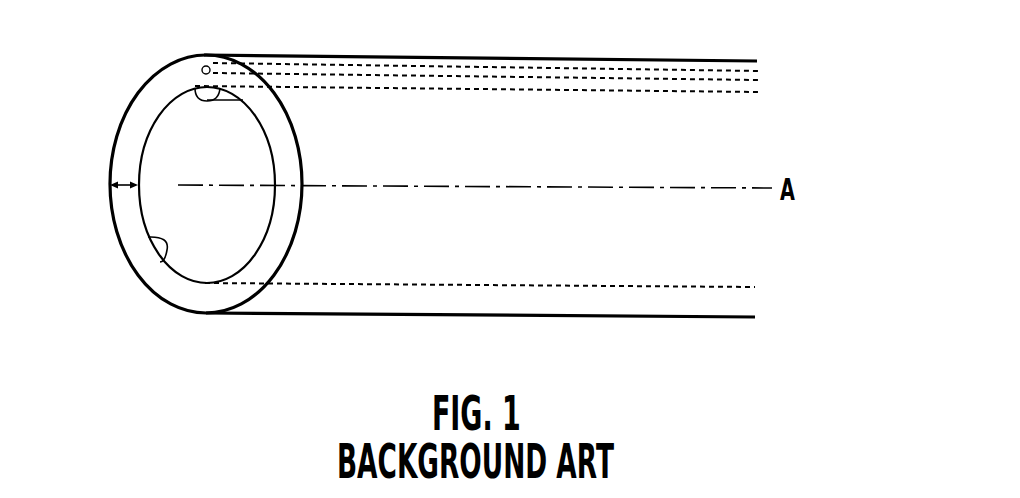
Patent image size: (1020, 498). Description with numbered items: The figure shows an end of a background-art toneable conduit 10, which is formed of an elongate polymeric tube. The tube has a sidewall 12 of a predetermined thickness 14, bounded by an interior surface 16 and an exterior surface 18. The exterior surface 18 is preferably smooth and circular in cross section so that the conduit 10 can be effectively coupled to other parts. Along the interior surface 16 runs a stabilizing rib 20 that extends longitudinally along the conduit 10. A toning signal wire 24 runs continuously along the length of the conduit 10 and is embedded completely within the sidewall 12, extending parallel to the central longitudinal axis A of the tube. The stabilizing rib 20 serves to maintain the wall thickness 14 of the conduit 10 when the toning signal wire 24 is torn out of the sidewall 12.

The toneable conduit 10 is at (660, 318).
The sidewall 12 is at (258, 274).
The thickness 14 is at (112, 190).
The interior surface 16 is at (150, 238).
The exterior surface 18 is at (161, 298).
The stabilizing rib 20 is at (160, 128).
The toning signal wire 24 is at (203, 63).